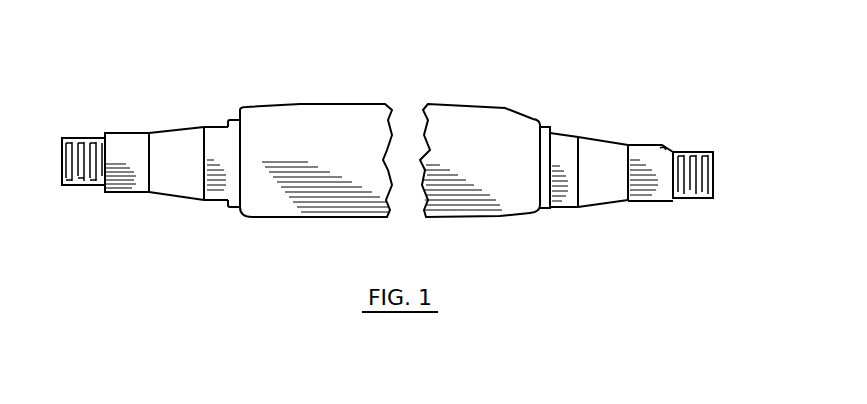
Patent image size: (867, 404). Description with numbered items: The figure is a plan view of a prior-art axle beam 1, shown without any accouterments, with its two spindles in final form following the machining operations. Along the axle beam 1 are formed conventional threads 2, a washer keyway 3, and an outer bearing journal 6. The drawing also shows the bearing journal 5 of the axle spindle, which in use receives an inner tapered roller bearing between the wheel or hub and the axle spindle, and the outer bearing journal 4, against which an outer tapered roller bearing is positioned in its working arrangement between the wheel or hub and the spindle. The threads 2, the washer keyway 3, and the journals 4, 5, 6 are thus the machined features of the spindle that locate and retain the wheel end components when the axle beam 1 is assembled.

The axle beam 1 is at (303, 105).
The threads 2 is at (692, 202).
The washer keyway 3 is at (666, 148).
The outer bearing journal 4 is at (658, 203).
The bearing journal 5 is at (565, 137).
The outer bearing journal 6 is at (546, 127).